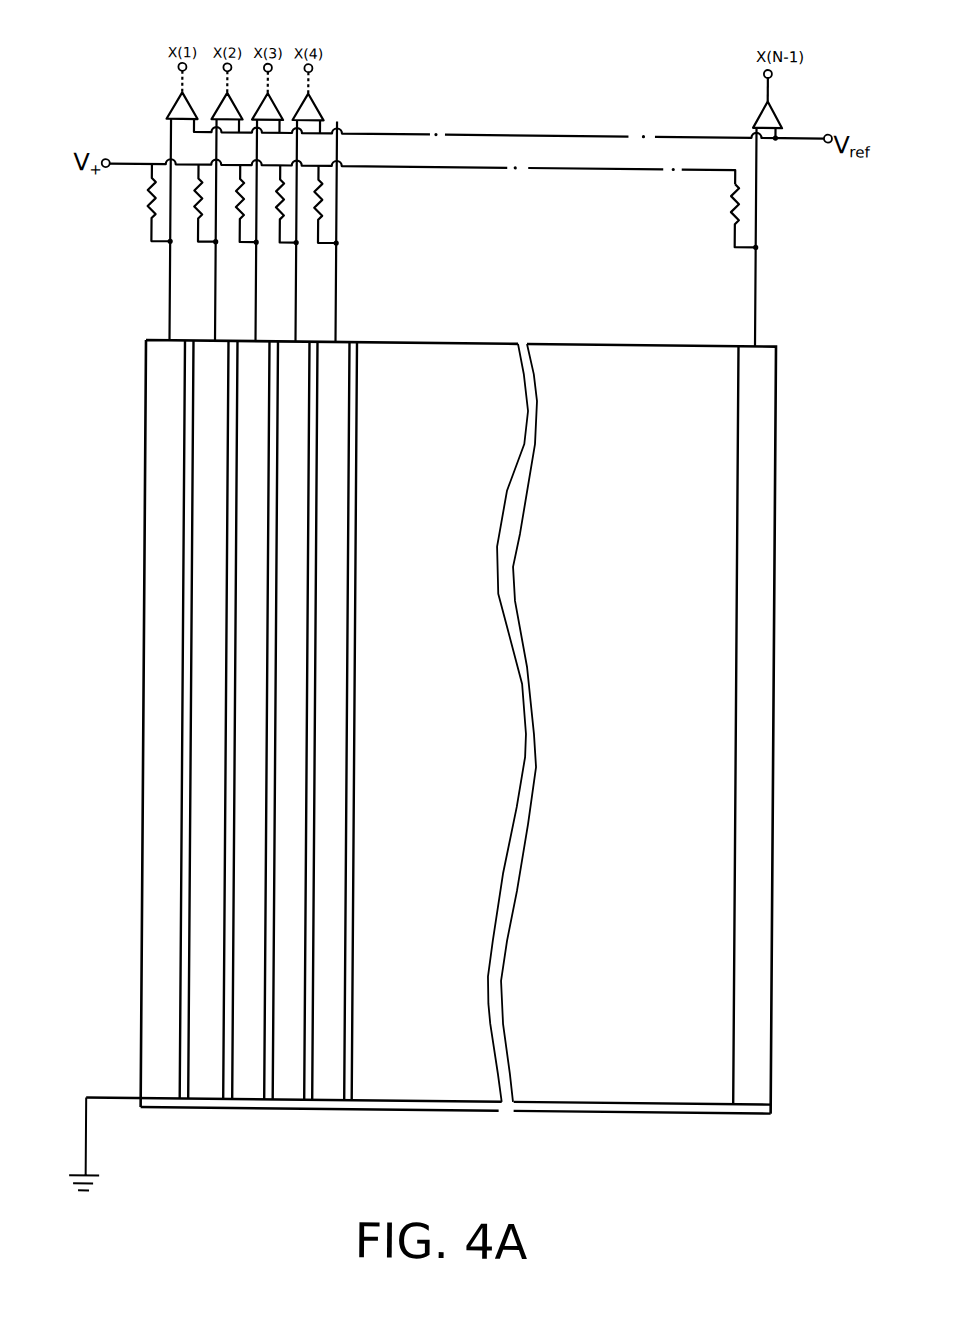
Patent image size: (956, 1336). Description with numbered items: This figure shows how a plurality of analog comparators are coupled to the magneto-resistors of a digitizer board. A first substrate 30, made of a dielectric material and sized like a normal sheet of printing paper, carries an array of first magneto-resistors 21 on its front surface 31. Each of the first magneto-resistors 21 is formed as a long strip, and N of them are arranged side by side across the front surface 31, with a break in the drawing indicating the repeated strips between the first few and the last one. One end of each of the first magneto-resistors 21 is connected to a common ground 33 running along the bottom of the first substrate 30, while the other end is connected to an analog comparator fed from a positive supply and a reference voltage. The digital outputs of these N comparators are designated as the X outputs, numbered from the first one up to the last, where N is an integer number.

The first magneto-resistors 21 is at (152, 665).
The first substrate 30 is at (408, 334).
The front surface 31 is at (470, 370).
The common ground 33 is at (203, 1102).